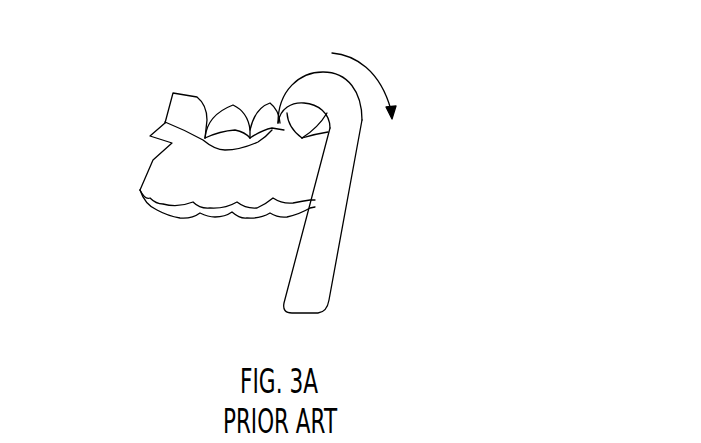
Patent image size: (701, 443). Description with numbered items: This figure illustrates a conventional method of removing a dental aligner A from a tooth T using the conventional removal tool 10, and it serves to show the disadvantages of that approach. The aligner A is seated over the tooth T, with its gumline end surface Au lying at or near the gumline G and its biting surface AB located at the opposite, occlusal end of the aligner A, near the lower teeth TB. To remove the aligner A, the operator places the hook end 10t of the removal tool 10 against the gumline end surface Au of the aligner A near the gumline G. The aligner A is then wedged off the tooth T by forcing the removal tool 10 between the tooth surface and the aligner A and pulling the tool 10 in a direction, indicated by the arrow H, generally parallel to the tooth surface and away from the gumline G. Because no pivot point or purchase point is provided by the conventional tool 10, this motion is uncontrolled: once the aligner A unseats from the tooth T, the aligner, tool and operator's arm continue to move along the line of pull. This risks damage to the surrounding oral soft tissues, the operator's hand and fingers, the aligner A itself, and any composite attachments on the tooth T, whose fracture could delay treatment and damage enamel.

The removal tool 10 is at (341, 245).
The hook end 10t is at (278, 121).
The direction of handle movement H is at (372, 87).
The gumline G is at (192, 96).
The tooth T is at (242, 121).
The gumline end surface Au is at (172, 133).
The aligner A is at (182, 170).
The biting surface AB is at (240, 221).
The lower teeth TB is at (255, 209).